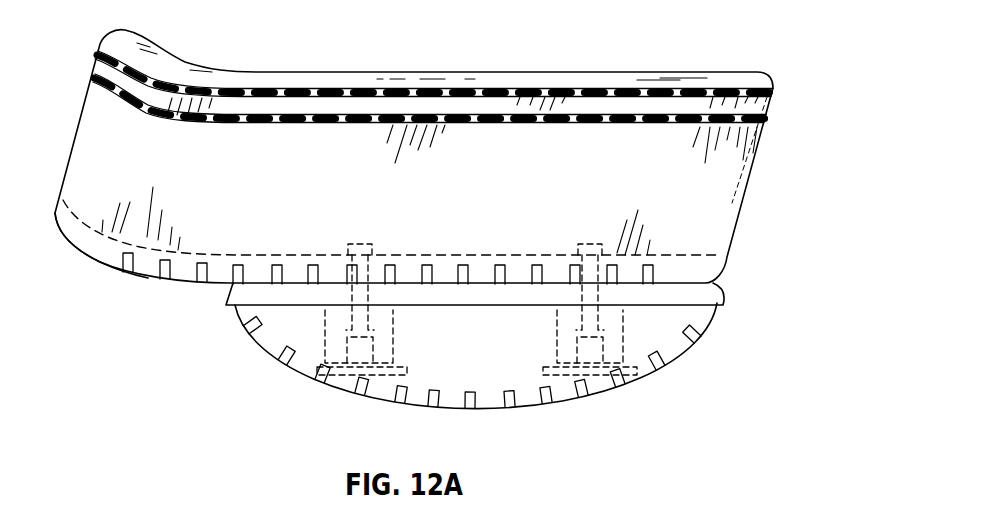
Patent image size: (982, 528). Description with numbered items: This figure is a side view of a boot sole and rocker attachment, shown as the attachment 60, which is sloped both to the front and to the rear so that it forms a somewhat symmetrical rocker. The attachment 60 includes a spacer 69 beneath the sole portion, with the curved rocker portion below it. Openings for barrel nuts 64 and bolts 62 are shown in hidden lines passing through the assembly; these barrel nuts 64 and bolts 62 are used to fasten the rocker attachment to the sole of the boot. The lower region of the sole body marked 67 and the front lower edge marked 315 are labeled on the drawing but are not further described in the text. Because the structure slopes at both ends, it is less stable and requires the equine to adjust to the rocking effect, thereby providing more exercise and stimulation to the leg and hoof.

The attachment 60 is at (778, 165).
The bolts 62 is at (323, 340).
The barrel nuts 64 is at (350, 243).
The base portion 67 is at (737, 262).
The spacer 69 is at (720, 283).
The edge 315 is at (108, 263).